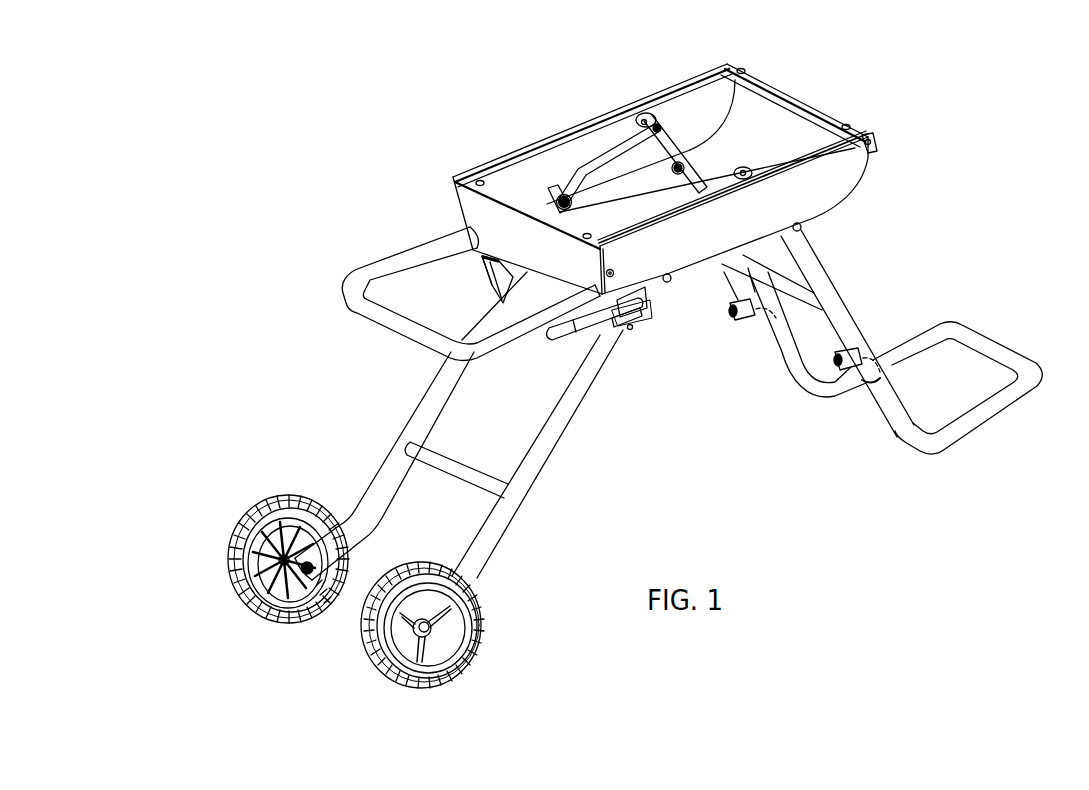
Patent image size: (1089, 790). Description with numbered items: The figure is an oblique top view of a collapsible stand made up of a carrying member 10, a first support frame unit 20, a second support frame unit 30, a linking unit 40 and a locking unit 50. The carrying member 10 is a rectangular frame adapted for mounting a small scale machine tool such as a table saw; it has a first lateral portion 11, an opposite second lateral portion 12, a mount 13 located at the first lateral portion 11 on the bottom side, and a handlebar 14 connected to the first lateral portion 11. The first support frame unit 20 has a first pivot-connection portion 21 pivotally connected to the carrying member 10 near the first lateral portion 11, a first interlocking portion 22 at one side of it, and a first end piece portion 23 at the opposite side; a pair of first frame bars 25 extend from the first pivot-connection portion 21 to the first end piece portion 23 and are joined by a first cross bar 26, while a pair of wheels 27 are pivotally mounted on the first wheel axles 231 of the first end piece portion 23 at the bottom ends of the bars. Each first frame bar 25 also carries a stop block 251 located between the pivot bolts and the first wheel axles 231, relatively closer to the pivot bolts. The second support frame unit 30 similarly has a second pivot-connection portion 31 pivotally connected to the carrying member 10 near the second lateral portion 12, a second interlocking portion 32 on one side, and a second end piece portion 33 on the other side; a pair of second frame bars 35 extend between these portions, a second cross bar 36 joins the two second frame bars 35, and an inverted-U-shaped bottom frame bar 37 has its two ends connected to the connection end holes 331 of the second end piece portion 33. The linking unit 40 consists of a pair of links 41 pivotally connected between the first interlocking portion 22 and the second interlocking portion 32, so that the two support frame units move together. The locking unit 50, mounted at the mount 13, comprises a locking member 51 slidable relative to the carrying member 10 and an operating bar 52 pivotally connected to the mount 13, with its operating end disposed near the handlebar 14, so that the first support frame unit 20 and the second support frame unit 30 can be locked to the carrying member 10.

The carrying member 10 is at (838, 113).
The first lateral portion 11 is at (467, 177).
The second lateral portion 12 is at (869, 139).
The mount 13 is at (647, 295).
The handlebar 14 is at (380, 313).
The first support frame unit 20 is at (561, 453).
The first pivot-connection portion 21 is at (672, 281).
The first interlocking portion 22 is at (560, 190).
The first end piece portion 23 is at (290, 508).
The first frame bars 25 is at (552, 424).
The first cross bar 26 is at (462, 470).
The wheels 27 is at (245, 515).
The second support frame unit 30 is at (870, 341).
The second pivot-connection portion 31 is at (687, 165).
The second interlocking portion 32 is at (614, 146).
The second end piece portion 33 is at (858, 382).
The second frame bars 35 is at (803, 257).
The second cross bar 36 is at (802, 292).
The inverted-U-shaped bottom frame bar 37 is at (983, 340).
The linking unit 40 is at (594, 154).
The links 41 is at (620, 150).
The locking unit 50 is at (627, 332).
The locking member 51 is at (629, 327).
The operating bar 52 is at (603, 327).
The first wheel axles 231 is at (316, 606).
The stop block 251 is at (503, 277).
The connection end holes 331 is at (882, 376).